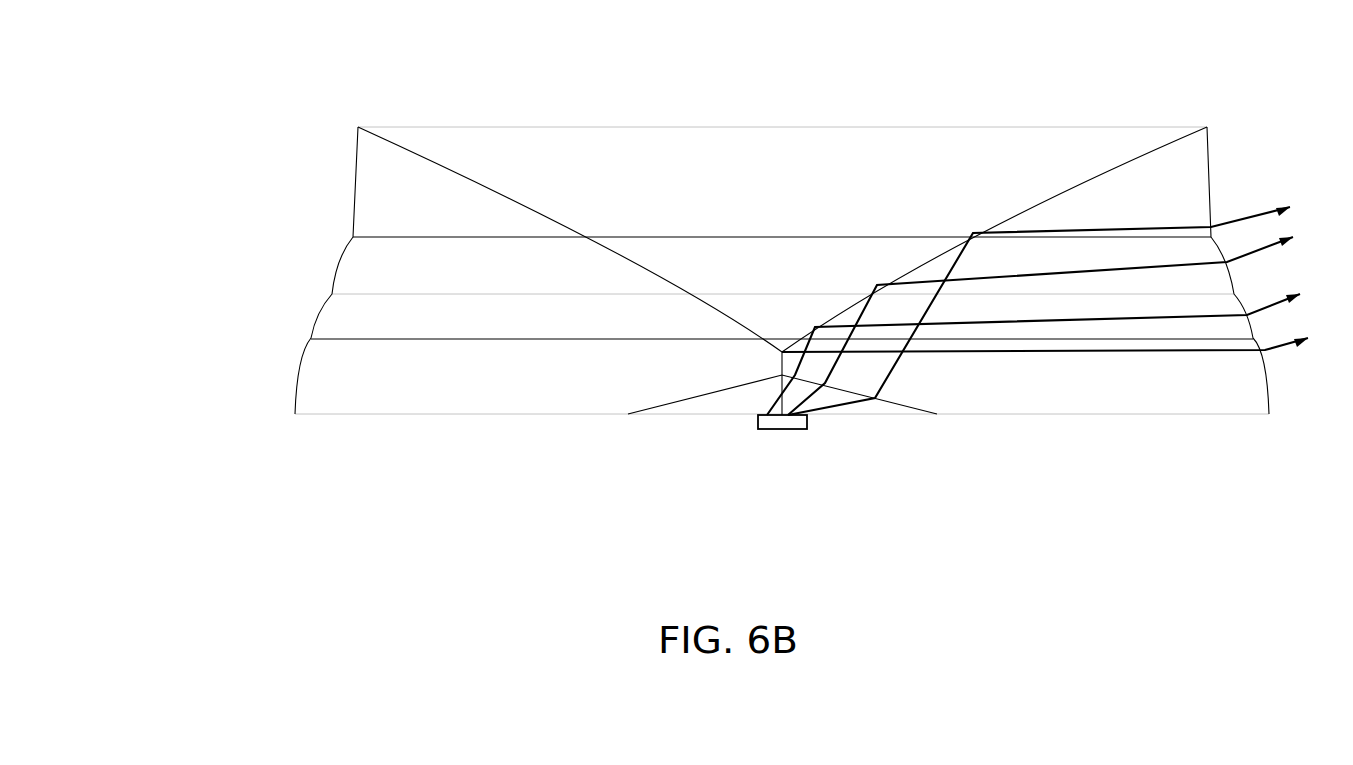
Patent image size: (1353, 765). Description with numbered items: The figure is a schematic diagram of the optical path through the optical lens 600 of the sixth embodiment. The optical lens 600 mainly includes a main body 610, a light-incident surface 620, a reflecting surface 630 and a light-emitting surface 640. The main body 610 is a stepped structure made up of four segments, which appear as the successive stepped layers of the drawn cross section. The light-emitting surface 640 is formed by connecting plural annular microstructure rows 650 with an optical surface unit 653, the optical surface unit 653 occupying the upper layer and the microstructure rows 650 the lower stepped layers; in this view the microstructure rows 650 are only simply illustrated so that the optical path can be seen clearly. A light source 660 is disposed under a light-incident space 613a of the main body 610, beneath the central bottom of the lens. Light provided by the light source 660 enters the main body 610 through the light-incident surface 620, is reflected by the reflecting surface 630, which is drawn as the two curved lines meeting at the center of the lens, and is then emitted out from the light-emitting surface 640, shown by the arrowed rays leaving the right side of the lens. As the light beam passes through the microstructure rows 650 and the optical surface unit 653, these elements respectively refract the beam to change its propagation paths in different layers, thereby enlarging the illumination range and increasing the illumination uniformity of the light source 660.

The optical lens 600 is at (176, 62).
The main body 610 is at (1200, 187).
The light-incident space 613a is at (837, 395).
The light-incident surface 620 is at (700, 393).
The reflecting surface 630 is at (1177, 142).
The light-emitting surface 640 is at (693, 270).
The annular microstructure rows 650 is at (385, 316).
The optical surface unit 653 is at (357, 183).
The light source 660 is at (775, 425).